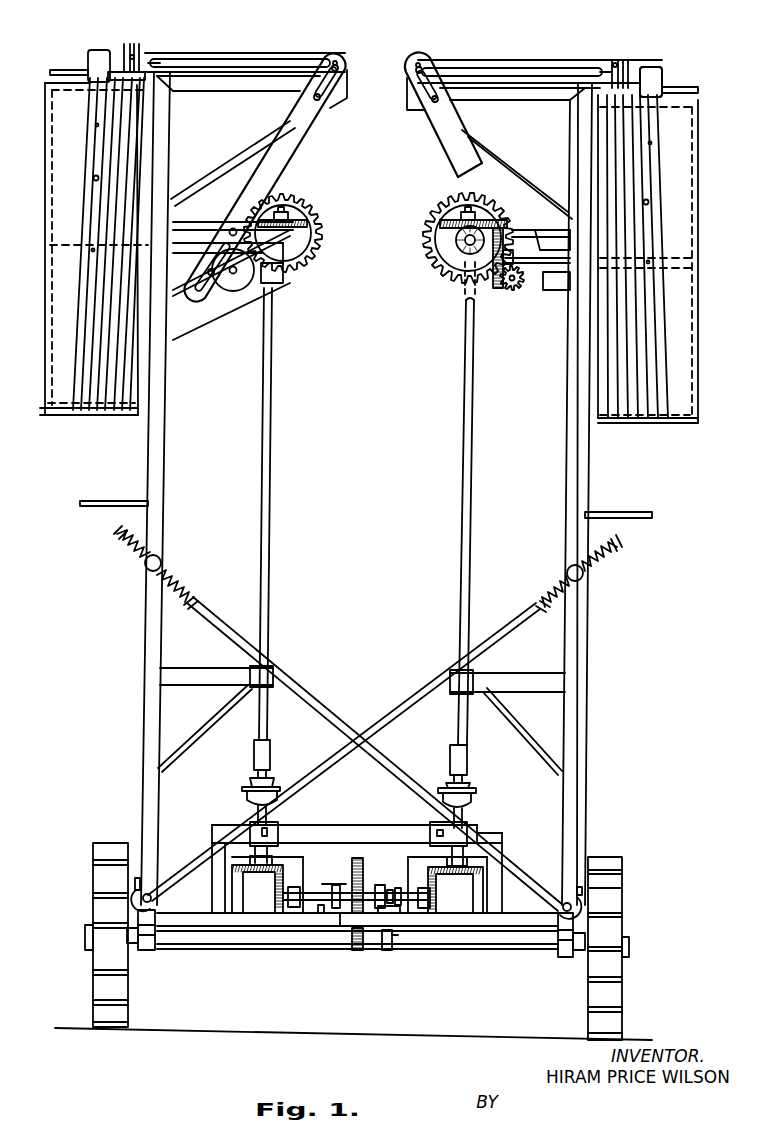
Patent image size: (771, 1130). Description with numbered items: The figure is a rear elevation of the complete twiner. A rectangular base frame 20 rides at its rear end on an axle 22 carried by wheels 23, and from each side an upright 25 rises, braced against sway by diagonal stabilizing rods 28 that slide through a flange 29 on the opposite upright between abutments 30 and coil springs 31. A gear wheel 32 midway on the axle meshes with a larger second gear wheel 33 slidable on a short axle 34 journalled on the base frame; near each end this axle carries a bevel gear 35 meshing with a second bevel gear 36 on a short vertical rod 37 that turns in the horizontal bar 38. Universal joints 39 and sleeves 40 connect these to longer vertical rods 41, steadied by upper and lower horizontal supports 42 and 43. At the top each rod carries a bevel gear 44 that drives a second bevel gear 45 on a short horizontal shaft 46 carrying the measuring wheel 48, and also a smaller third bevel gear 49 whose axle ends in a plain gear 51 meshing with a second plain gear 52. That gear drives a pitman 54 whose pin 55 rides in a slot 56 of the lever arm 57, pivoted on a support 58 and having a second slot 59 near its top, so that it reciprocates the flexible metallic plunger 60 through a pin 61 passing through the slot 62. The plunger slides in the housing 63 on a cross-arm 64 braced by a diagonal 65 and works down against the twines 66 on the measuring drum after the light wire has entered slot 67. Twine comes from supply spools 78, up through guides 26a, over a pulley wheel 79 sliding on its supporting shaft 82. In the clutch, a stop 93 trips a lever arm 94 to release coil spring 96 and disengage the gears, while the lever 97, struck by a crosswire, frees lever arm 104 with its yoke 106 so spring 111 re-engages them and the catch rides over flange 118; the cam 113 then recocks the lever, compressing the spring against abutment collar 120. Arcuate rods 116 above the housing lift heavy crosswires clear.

The base frame 20 is at (209, 930).
The axle 22 is at (185, 945).
The wheels 23 is at (93, 992).
The upright 25 is at (143, 800).
The guides 26a is at (82, 504).
The stabilizing rod 28 is at (352, 722).
The flange 29 is at (162, 560).
The abutments 30 is at (123, 532).
The coil springs 31 is at (133, 552).
The gear wheel 32 is at (356, 952).
The second gear wheel 33 is at (358, 856).
The short axle 34 is at (310, 905).
The bevel gear 35 is at (280, 913).
The second bevel gear 36 is at (245, 915).
The short vertical rod 37 is at (278, 826).
The horizontal bar 38 is at (326, 830).
The universal joints 39 is at (272, 778).
The sleeves 40 is at (272, 750).
The longer vertical rods 41 is at (270, 582).
The upper horizontal support 42 is at (284, 280).
The lower horizontal support 43 is at (207, 667).
The bevel gear 44 is at (308, 218).
The second bevel gear 45 is at (506, 240).
The short horizontal shaft 46 is at (556, 290).
The measuring wheel 48 is at (44, 416).
The third bevel gear 49 is at (460, 250).
The plain gear 51 is at (306, 206).
The second plain gear 52 is at (506, 292).
The pitman 54 is at (244, 290).
The pin 55 is at (215, 285).
The slot 56 is at (196, 300).
The lever arm 57 is at (298, 142).
The support 58 is at (206, 222).
The second slot 59 is at (337, 103).
The flexible metallic plunger 60 is at (256, 57).
The pin 61 is at (338, 58).
The slot 62 is at (290, 60).
The housing 63 is at (210, 56).
The cross-arm 64 is at (231, 89).
The diagonal 65 is at (222, 163).
The twines 66 is at (118, 415).
The slot 67 is at (131, 52).
The supply spools 78 is at (190, 858).
The pulley wheel 79 is at (650, 70).
The supporting shaft 82 is at (690, 86).
The stop 93 is at (321, 913).
The lever arm 94 is at (336, 884).
The coil spring 96 is at (345, 912).
The lever 97 is at (112, 70).
The lever arm 104 is at (386, 952).
The yoke 106 is at (380, 884).
The spring 111 is at (390, 888).
The cam 113 is at (393, 950).
The arcuate rods 116 is at (136, 57).
The flange 118 is at (340, 928).
The abutment collar 120 is at (398, 886).